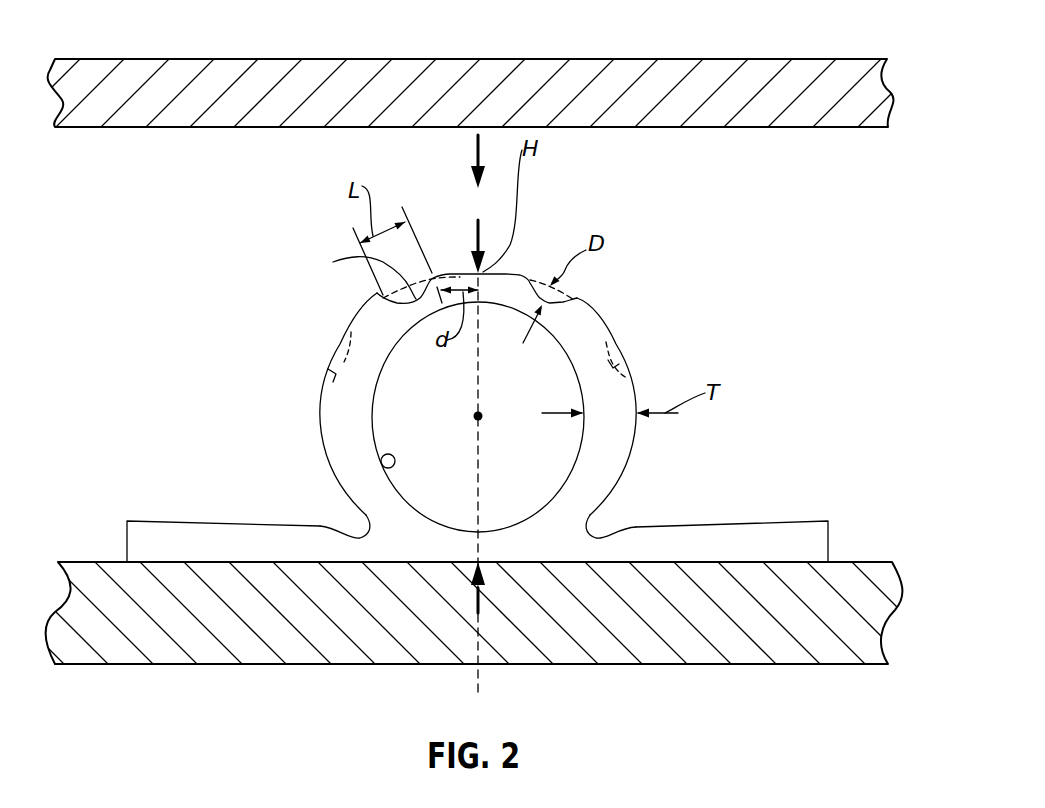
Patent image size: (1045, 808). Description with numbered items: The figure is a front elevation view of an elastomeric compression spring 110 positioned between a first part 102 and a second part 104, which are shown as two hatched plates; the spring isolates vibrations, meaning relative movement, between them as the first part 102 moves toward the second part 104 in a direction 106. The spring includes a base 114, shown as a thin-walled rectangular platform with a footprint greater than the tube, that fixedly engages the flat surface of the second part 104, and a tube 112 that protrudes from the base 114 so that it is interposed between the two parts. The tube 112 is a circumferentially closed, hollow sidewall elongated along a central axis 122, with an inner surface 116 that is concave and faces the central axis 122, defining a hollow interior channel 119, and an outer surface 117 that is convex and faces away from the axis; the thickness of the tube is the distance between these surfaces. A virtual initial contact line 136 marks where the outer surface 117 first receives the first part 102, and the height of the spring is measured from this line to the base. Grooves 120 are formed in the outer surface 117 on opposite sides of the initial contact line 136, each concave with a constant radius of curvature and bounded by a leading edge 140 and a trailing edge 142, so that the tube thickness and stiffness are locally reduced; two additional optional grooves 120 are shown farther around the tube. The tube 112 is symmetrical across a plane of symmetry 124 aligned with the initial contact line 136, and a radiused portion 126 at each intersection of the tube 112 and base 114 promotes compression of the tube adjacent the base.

The first part 102 is at (802, 108).
The second part 104 is at (852, 585).
The direction 106 is at (476, 152).
The elastomeric compression spring 110 is at (668, 262).
The tube 112 is at (476, 347).
The base 114 is at (767, 524).
The inner surface 116 is at (378, 470).
The outer surface 117 is at (318, 430).
The hollow interior channel 119 is at (538, 464).
The groove 120 is at (650, 352).
The central axis 122 is at (482, 411).
The plane of symmetry 124 is at (478, 474).
The radiused portion 126 is at (362, 530).
The initial contact line 136 is at (516, 280).
The leading edge 140 is at (440, 270).
The trailing edge 142 is at (377, 293).